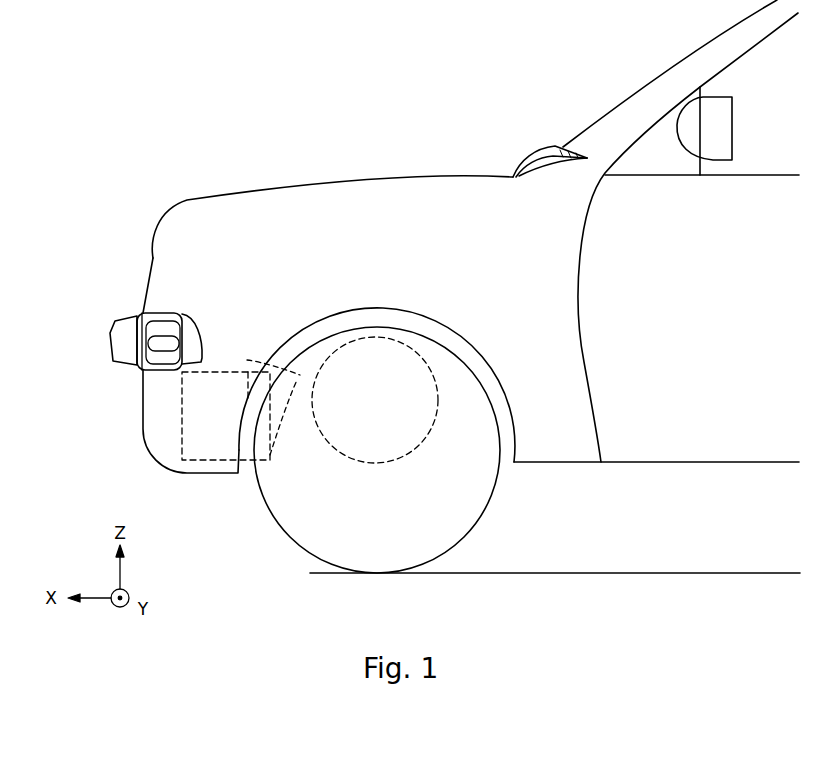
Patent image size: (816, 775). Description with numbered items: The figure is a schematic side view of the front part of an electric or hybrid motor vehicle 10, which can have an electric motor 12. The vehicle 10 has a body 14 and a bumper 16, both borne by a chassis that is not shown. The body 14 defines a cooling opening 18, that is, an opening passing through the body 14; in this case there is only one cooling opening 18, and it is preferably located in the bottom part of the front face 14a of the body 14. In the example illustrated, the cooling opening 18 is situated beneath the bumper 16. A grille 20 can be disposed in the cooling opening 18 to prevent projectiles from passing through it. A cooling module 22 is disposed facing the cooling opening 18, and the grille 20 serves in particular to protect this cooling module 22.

The motor vehicle 10 is at (196, 87).
The electric motor 12 is at (329, 441).
The body 14 is at (167, 213).
The front face 14a is at (142, 247).
The bumper 16 is at (117, 331).
The cooling opening 18 is at (175, 417).
The grille 20 is at (141, 396).
The cooling module 22 is at (170, 426).